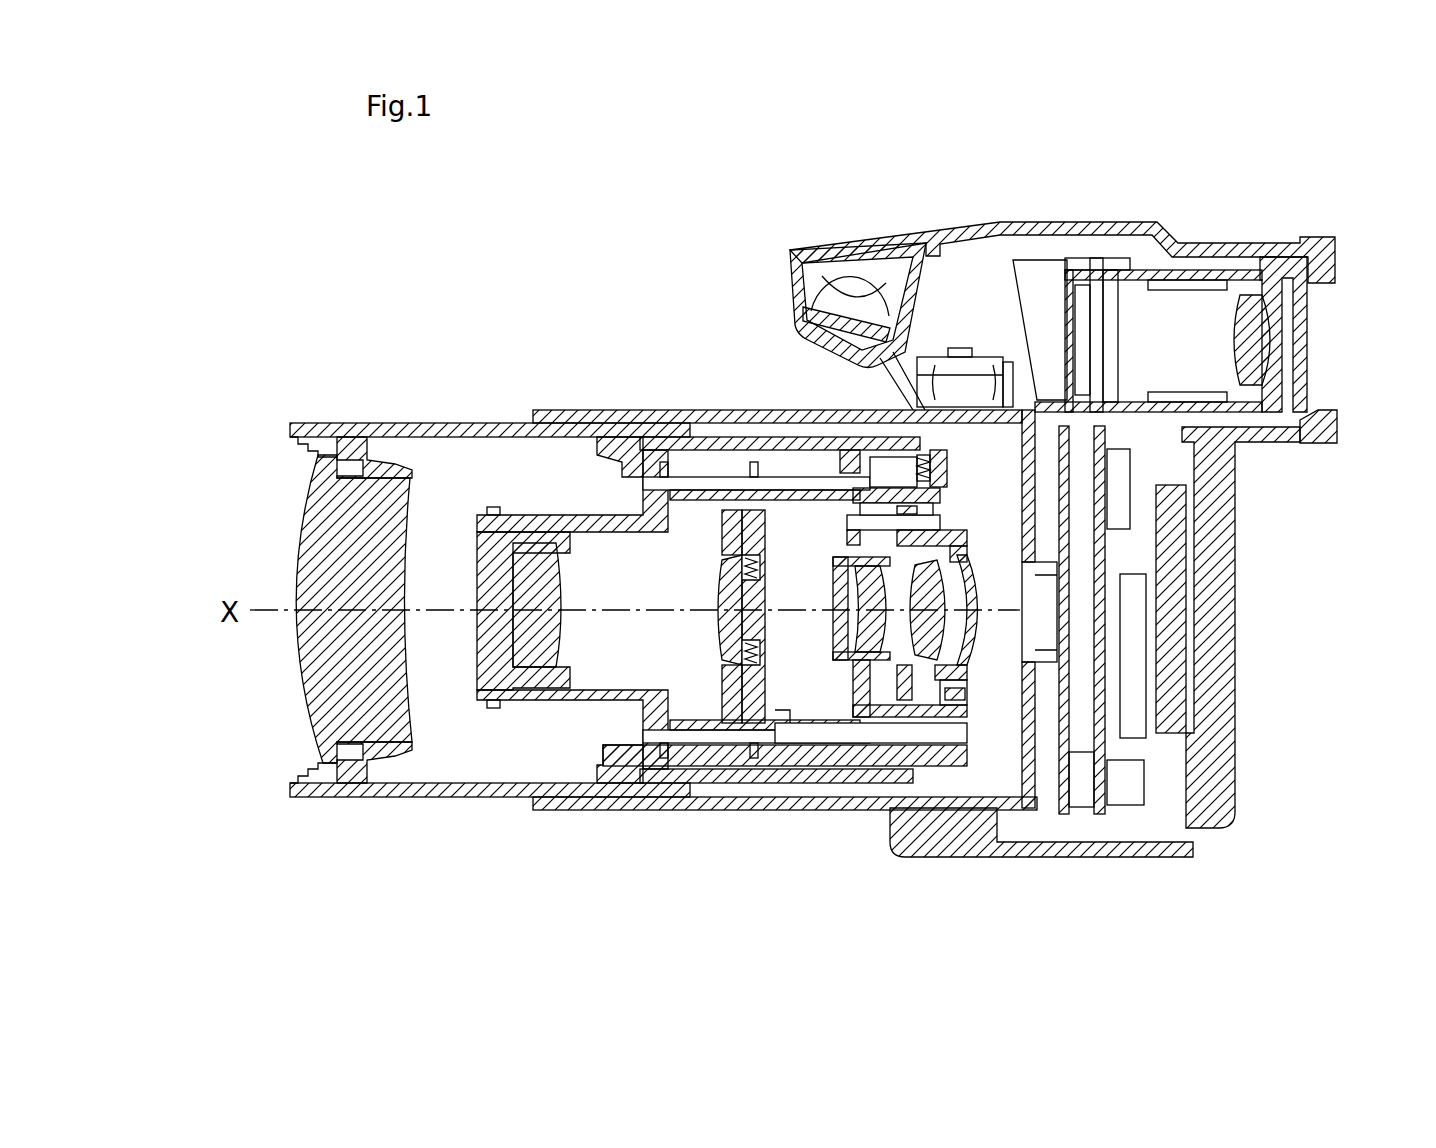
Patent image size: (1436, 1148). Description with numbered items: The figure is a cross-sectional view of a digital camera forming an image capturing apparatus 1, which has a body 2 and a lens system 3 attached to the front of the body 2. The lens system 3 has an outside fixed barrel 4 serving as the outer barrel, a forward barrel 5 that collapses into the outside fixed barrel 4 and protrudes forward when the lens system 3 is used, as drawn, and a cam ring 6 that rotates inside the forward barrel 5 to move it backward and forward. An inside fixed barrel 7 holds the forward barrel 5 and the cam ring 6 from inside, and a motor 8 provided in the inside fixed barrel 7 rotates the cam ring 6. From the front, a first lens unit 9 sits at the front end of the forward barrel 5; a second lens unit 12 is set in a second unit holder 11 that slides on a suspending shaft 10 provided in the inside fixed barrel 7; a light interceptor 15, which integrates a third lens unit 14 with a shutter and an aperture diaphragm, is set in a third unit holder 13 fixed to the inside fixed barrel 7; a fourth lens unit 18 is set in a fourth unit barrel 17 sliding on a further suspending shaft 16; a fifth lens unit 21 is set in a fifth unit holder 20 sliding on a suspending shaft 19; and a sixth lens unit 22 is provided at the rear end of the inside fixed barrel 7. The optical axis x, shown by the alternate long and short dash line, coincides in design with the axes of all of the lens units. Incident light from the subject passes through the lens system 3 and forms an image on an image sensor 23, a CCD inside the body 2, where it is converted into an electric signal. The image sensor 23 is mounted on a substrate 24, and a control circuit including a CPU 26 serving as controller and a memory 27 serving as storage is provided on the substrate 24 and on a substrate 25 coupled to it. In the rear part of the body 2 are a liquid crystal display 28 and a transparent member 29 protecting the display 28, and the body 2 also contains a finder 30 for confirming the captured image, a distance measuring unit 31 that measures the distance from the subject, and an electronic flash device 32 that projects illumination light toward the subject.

The image capturing apparatus 1 is at (527, 300).
The body 2 is at (1127, 208).
The lens system 3 is at (596, 400).
The outside fixed barrel 4 is at (661, 410).
The forward barrel 5 is at (443, 423).
The cam ring 6 is at (777, 437).
The inside fixed barrel 7 is at (597, 455).
The motor 8 is at (890, 455).
The first lens unit 9 is at (293, 568).
The suspending shaft 10 is at (706, 477).
The second unit holder 11 is at (520, 510).
The second lens unit 12 is at (480, 595).
The third unit holder 13 is at (722, 650).
The third lens unit 14 is at (720, 595).
The light interceptor 15 is at (768, 560).
The suspending shaft 16 is at (815, 740).
The fourth unit barrel 17 is at (850, 680).
The fourth lens unit 18 is at (838, 588).
The suspending shaft 19 is at (848, 522).
The fifth unit holder 20 is at (923, 500).
The fifth lens unit 21 is at (975, 580).
The sixth lens unit 22 is at (970, 595).
The image sensor 23 is at (1025, 620).
The substrate 24 is at (1067, 814).
The substrate 25 is at (1103, 814).
The CPU 26 is at (1143, 738).
The memory 27 is at (1130, 490).
The display 28 is at (1200, 645).
The transparent member 29 is at (1235, 560).
The finder 30 is at (1307, 330).
The distance measuring unit 31 is at (965, 350).
The electronic flash device 32 is at (850, 266).